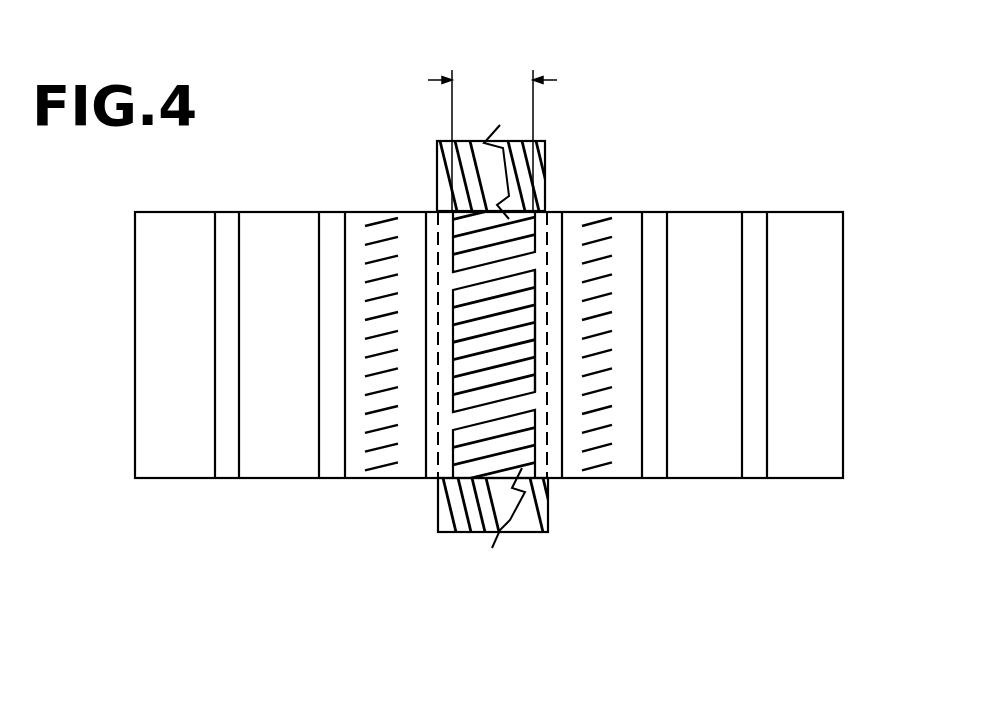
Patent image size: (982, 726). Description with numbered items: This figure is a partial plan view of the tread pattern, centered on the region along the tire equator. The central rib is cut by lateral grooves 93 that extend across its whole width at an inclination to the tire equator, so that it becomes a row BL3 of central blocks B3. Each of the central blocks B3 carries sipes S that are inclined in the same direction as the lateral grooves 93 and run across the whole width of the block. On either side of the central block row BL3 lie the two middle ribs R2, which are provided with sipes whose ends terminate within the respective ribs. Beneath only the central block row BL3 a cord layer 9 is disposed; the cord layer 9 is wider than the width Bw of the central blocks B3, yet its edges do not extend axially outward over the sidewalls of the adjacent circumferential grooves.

The cord layer 9 is at (547, 532).
The lateral grooves 93 is at (540, 252).
The row of central blocks BL3 is at (513, 215).
The central blocks B3 is at (535, 312).
The sipes S is at (535, 360).
The middle ribs R2 is at (408, 478).
The width of the central blocks Bw is at (492, 138).